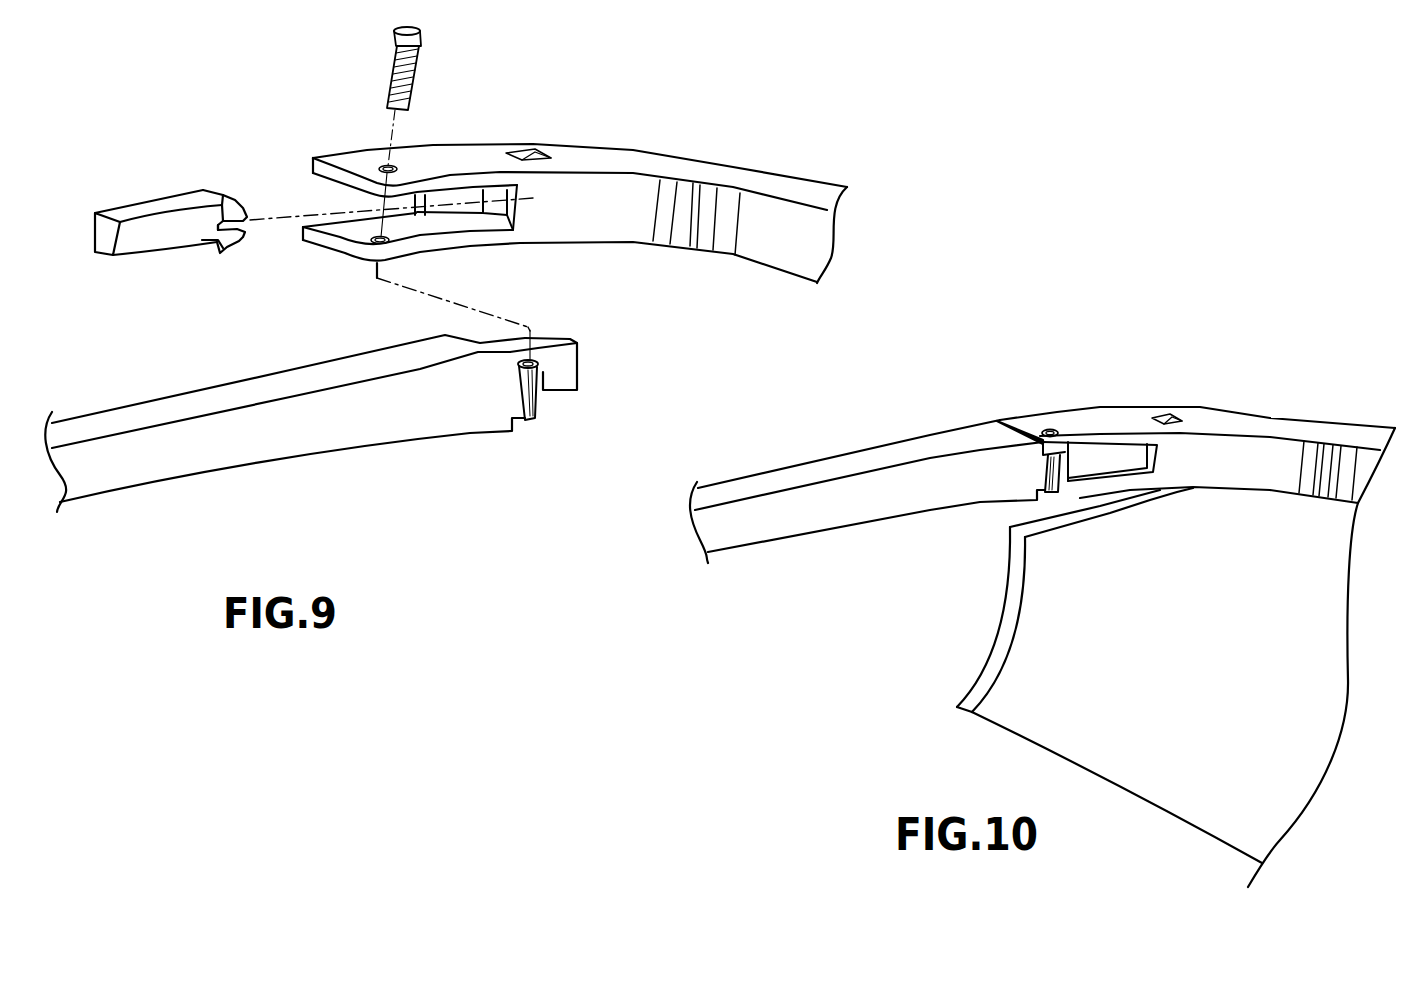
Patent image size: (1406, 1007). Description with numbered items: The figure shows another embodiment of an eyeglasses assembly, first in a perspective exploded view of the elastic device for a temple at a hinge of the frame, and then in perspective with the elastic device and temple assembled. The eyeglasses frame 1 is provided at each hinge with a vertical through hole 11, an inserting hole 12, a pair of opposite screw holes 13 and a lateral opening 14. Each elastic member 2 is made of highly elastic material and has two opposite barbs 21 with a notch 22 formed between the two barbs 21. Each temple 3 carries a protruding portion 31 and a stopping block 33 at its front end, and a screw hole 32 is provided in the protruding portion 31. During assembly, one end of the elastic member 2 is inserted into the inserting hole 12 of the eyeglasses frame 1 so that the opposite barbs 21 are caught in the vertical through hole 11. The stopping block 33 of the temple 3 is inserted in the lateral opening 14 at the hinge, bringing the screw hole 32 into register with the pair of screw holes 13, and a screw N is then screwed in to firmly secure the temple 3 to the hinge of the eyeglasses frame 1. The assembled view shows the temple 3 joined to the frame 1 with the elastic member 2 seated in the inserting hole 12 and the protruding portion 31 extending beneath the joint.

In FIG. 9, the eyeglasses frame 1 is at (703, 142).
In FIG. 10, the eyeglasses frame 1 is at (1220, 455).
In FIG. 9, the vertical through hole 11 is at (538, 156).
In FIG. 10, the vertical through hole 11 is at (1168, 418).
In FIG. 9, the inserting hole 12 is at (490, 197).
In FIG. 10, the inserting hole 12 is at (1135, 452).
In FIG. 9, the screw holes 13 is at (383, 166).
In FIG. 9, the lateral opening 14 is at (320, 197).
In FIG. 9, the elastic member 2 is at (141, 199).
In FIG. 10, the elastic member 2 is at (1086, 458).
In FIG. 9, the barbs 21 is at (234, 203).
In FIG. 9, the notch 22 is at (239, 222).
In FIG. 9, the temple 3 is at (365, 456).
In FIG. 10, the temple 3 is at (872, 492).
In FIG. 9, the protruding portion 31 is at (543, 397).
In FIG. 10, the protruding portion 31 is at (1047, 468).
In FIG. 9, the screw hole 32 is at (548, 352).
In FIG. 9, the stopping block 33 is at (547, 337).
In FIG. 9, the screw N is at (392, 64).
In FIG. 10, the screw N is at (1050, 430).